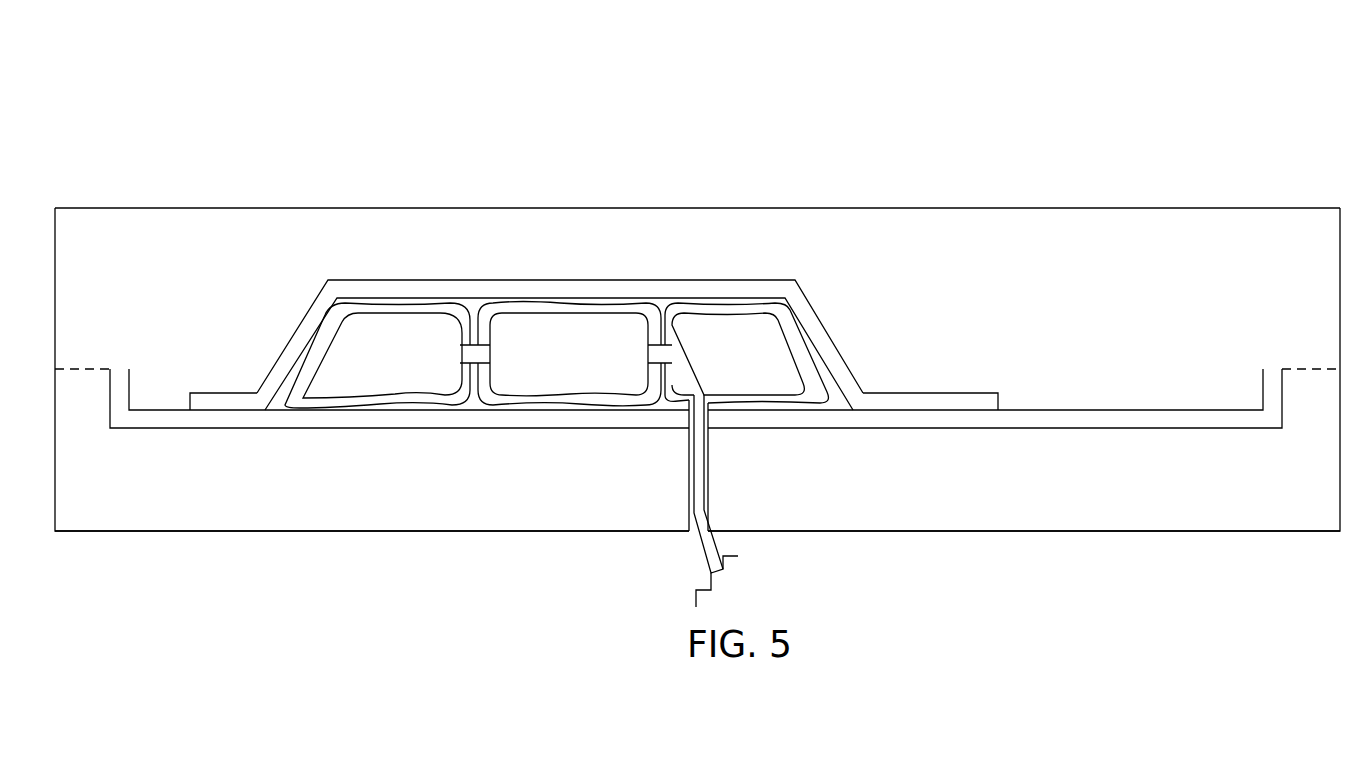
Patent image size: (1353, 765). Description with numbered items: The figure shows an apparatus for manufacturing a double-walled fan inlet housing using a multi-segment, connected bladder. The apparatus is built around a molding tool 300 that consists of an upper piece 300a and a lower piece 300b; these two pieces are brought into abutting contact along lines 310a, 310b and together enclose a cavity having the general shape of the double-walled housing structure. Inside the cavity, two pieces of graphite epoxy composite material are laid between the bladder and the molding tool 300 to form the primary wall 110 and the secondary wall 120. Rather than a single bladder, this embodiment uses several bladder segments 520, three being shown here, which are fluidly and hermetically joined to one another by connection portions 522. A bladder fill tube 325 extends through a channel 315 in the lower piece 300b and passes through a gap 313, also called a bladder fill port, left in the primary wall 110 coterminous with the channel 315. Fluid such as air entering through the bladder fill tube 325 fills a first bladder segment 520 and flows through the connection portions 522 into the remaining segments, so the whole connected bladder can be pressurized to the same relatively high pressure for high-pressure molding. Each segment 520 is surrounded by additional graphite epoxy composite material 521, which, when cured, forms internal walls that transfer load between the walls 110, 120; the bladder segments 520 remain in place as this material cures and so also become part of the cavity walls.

The molding tool 300 is at (1117, 165).
The upper piece 300a is at (1199, 218).
The lower piece 300b is at (1033, 518).
The abutting contact line 310a is at (99, 367).
The abutting contact line 310b is at (1302, 367).
The primary wall 110 is at (937, 420).
The secondary wall 120 is at (770, 285).
The bladder segment 520 is at (419, 330).
The additional graphite epoxy composite material 521 is at (373, 400).
The connection portion 522 is at (488, 356).
The gap 313 is at (705, 418).
The channel 315 is at (693, 495).
The bladder fill tube 325 is at (695, 548).